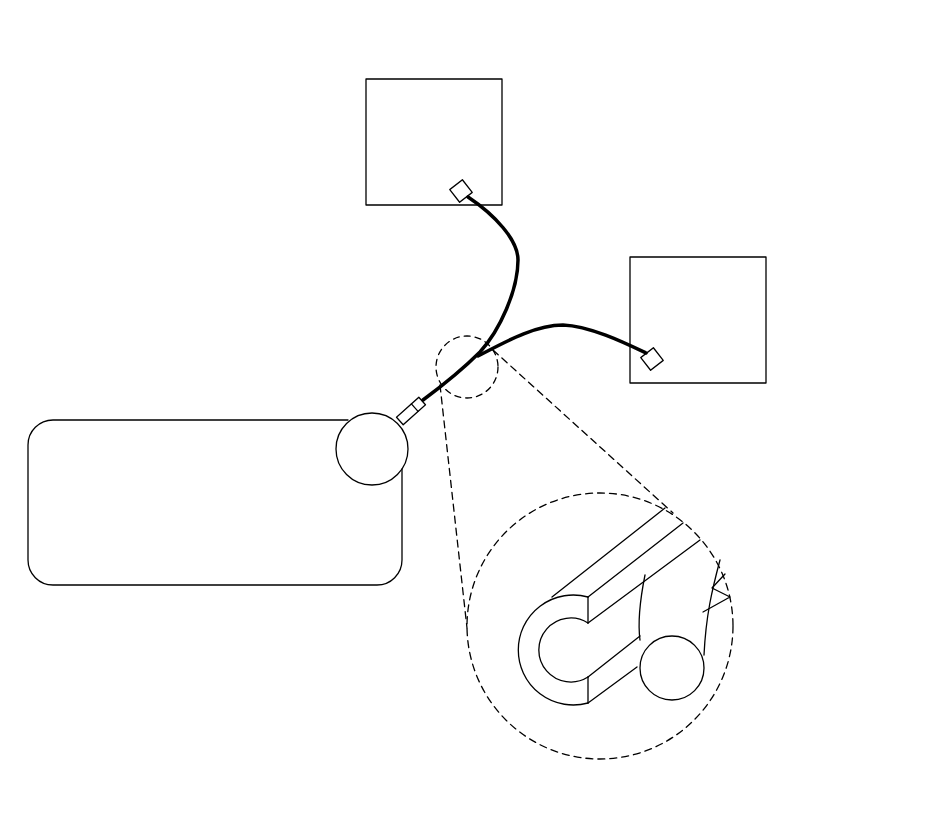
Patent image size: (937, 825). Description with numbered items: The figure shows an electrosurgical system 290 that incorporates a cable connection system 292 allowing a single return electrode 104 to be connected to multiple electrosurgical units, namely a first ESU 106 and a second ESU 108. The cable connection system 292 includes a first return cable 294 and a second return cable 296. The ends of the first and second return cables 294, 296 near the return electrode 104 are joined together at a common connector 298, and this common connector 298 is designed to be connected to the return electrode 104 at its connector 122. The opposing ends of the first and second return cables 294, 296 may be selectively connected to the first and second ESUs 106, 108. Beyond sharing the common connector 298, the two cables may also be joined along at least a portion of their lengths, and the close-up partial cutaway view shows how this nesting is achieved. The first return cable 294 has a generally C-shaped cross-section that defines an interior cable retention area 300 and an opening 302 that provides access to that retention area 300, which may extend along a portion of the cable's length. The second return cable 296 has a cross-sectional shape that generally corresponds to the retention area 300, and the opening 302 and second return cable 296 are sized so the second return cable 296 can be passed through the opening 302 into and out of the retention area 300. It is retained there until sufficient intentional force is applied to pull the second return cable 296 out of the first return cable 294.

The electrosurgical system 290 is at (147, 72).
The first ESU 106 is at (465, 79).
The second ESU 108 is at (717, 257).
The return electrode 104 is at (220, 585).
The connector 122 is at (393, 417).
The cable connection system 292 is at (470, 217).
The first return cable 294 is at (531, 231).
The second return cable 296 is at (562, 318).
The common connector 298 is at (413, 421).
The cable retention area 300 is at (575, 649).
The opening 302 is at (602, 637).